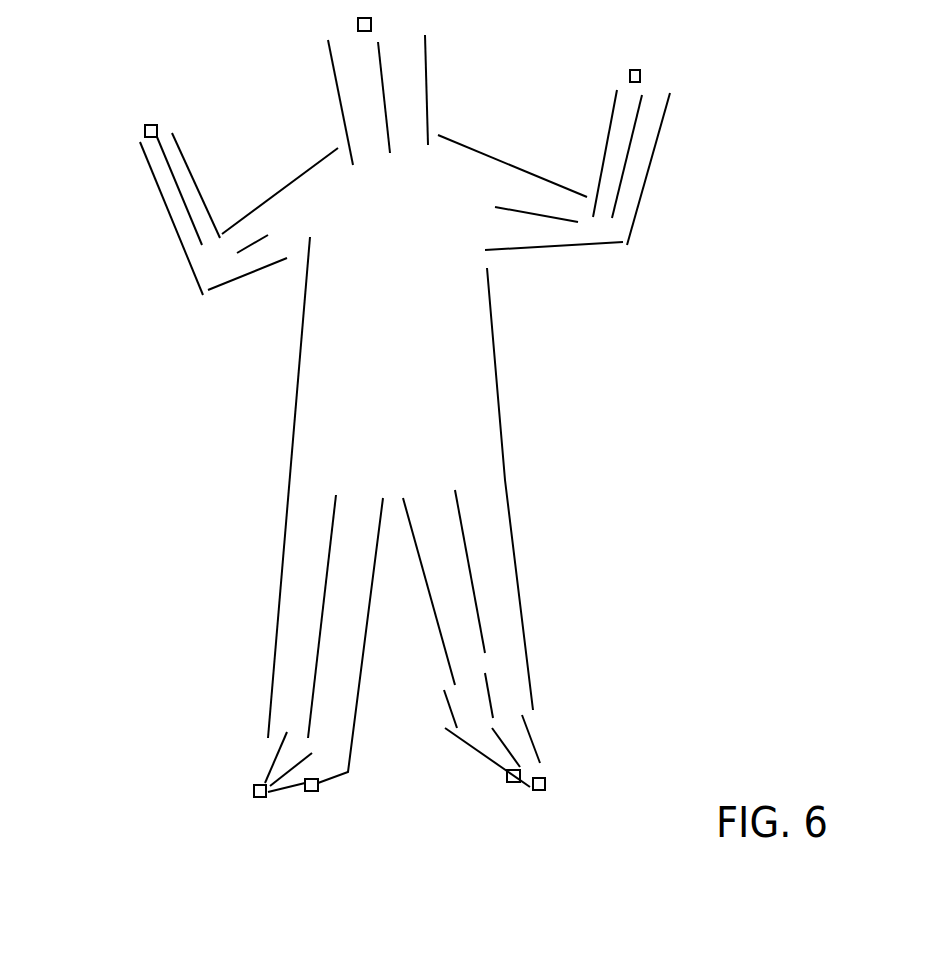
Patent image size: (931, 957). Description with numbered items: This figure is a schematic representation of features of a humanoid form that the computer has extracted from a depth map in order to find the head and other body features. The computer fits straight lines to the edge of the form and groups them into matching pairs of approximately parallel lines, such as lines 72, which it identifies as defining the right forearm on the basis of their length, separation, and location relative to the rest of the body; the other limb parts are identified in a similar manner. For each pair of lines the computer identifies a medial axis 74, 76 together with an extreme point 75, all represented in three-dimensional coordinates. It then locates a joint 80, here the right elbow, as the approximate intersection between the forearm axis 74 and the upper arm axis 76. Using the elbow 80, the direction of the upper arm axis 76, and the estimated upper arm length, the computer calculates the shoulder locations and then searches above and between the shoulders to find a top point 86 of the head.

The lines 72 is at (150, 172).
The medial axis 74 is at (185, 202).
The extreme point 75 is at (145, 131).
The medial axis 76 is at (250, 252).
The joint 80 is at (215, 263).
The top point 86 is at (358, 22).